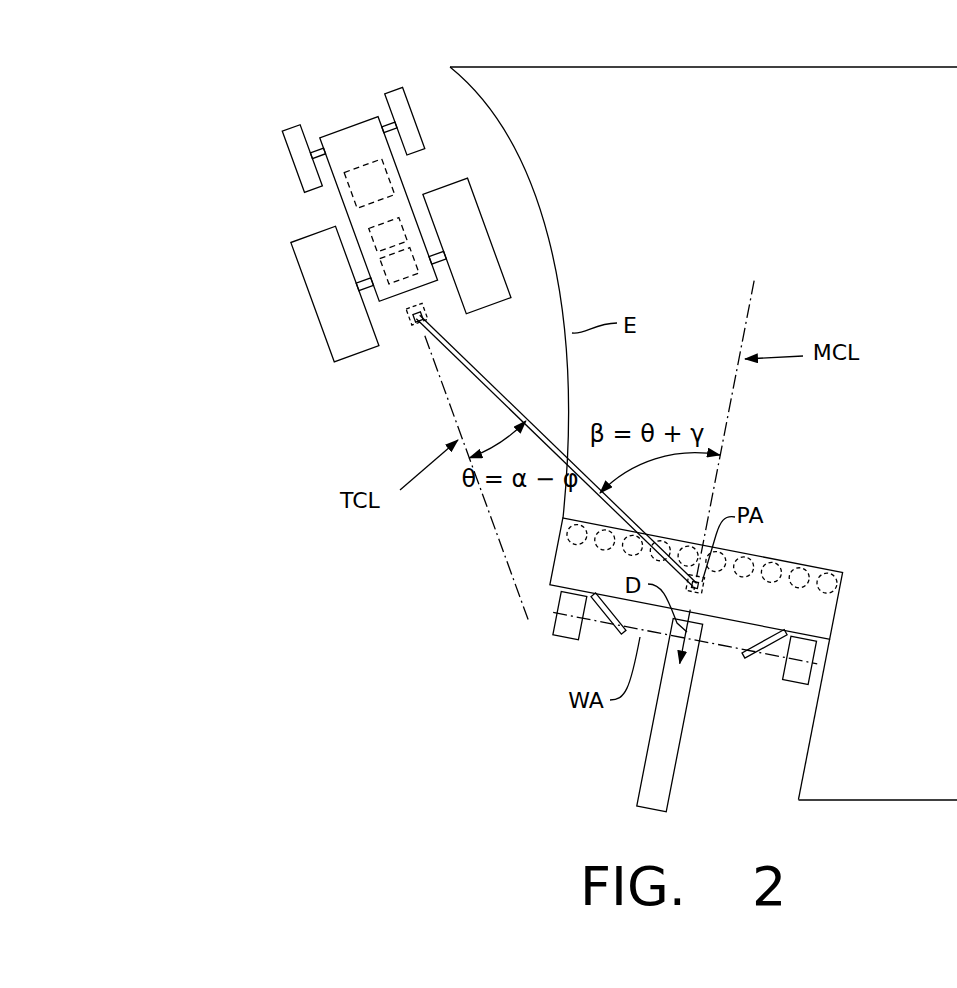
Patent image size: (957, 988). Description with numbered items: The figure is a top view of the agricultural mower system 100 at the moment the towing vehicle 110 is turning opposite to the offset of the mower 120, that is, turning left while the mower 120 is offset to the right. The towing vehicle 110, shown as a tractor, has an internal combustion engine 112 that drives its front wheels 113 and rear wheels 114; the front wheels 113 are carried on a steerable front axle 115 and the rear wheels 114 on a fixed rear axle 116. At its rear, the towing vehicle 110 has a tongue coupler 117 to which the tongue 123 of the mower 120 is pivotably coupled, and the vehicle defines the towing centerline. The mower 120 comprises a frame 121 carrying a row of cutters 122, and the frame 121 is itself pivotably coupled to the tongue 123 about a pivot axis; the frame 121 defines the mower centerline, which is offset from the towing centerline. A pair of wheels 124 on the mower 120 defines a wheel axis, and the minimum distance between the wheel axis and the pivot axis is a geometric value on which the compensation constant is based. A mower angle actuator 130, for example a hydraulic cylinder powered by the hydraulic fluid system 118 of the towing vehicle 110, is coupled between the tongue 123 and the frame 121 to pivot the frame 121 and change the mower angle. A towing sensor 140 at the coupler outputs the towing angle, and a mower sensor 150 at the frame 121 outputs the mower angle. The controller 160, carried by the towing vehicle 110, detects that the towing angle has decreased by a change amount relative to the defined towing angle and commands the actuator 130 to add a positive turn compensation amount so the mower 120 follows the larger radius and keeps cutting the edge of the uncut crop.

The agricultural mower system 100 is at (286, 650).
The towing vehicle 110 is at (390, 343).
The internal combustion engine 112 is at (348, 190).
The front wheels 113 is at (398, 92).
The rear wheels 114 is at (473, 210).
The front axle 115 is at (389, 115).
The rear axle 116 is at (437, 266).
The tongue coupler 117 is at (413, 323).
The hydraulic fluid system 118 is at (385, 279).
The mower 120 is at (710, 549).
The frame 121 is at (833, 615).
The cutters 122 is at (773, 560).
The tongue 123 is at (497, 383).
The wheels 124 is at (559, 637).
The mower angle actuator 130 is at (700, 590).
The towing sensor 140 is at (426, 313).
The mower sensor 150 is at (706, 586).
The controller 160 is at (393, 213).